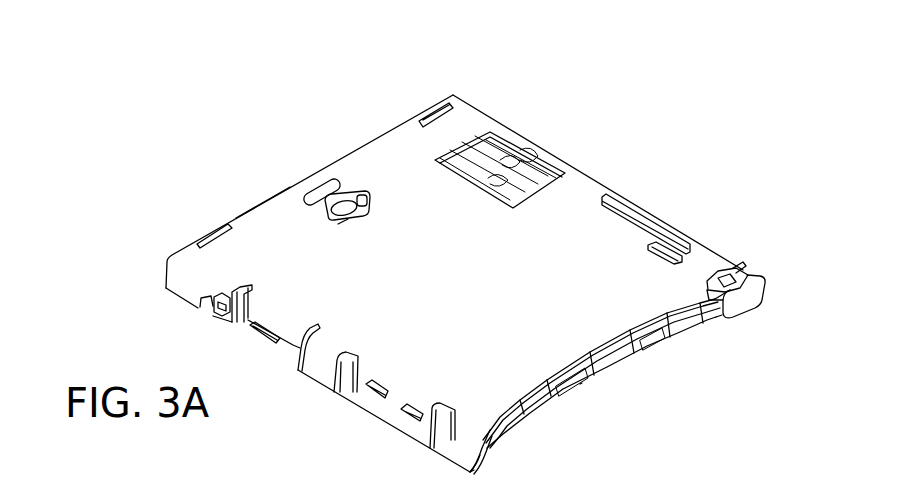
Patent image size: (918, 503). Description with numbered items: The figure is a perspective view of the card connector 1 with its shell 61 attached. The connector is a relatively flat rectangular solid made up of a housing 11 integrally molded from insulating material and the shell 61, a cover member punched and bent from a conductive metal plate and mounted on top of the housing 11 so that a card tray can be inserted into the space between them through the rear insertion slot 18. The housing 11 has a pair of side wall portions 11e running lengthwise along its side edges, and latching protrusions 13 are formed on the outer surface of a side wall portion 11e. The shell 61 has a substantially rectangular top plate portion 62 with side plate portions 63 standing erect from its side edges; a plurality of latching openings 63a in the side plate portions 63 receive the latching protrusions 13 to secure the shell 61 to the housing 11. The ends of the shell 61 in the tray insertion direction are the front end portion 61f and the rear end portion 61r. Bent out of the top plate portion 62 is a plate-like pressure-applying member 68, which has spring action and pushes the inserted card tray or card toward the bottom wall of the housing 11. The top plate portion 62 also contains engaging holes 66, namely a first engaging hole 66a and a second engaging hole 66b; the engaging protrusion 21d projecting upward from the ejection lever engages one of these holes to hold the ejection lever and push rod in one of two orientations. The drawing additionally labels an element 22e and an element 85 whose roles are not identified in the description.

The card connector 1 is at (421, 86).
The housing 11 is at (545, 410).
The side wall portion 11e is at (488, 486).
The latching protrusion 13 is at (367, 398).
The rear insertion slot 18 is at (713, 308).
The engaging protrusion 21d is at (340, 224).
The eject lever plate 22e is at (738, 310).
The shell 61 is at (590, 172).
The front end portion 61f is at (260, 207).
The rear end portion 61r is at (490, 433).
The top plate portion 62 is at (423, 143).
The side plate portion 63 is at (383, 412).
The latching opening 63a is at (407, 440).
The engaging hole 66 is at (357, 128).
The first engaging hole 66a is at (335, 180).
The second engaging hole 66b is at (311, 178).
The pressure-applying member 68 is at (497, 187).
The terminal 85 is at (578, 443).